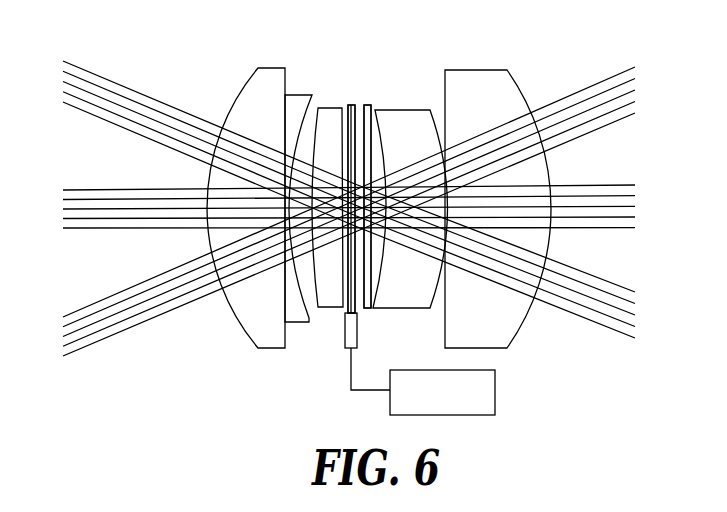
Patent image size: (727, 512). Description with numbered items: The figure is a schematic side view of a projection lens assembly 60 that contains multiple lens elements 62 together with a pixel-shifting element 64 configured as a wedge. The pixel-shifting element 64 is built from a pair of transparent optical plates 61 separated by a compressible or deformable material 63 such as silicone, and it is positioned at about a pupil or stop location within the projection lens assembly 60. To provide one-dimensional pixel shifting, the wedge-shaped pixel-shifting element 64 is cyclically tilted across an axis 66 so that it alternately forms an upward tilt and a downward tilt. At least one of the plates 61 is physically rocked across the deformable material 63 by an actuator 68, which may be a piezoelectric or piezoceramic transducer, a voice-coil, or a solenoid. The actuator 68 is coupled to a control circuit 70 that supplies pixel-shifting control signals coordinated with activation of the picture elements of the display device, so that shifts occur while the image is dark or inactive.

The projection lens assembly 60 is at (218, 353).
The transparent optical plates 61 is at (352, 104).
The lens elements 62 is at (330, 108).
The deformable material 63 is at (367, 255).
The pixel-shifting element 64 is at (372, 76).
The axis 66 is at (386, 180).
The actuator 68 is at (344, 335).
The control circuit 70 is at (496, 382).